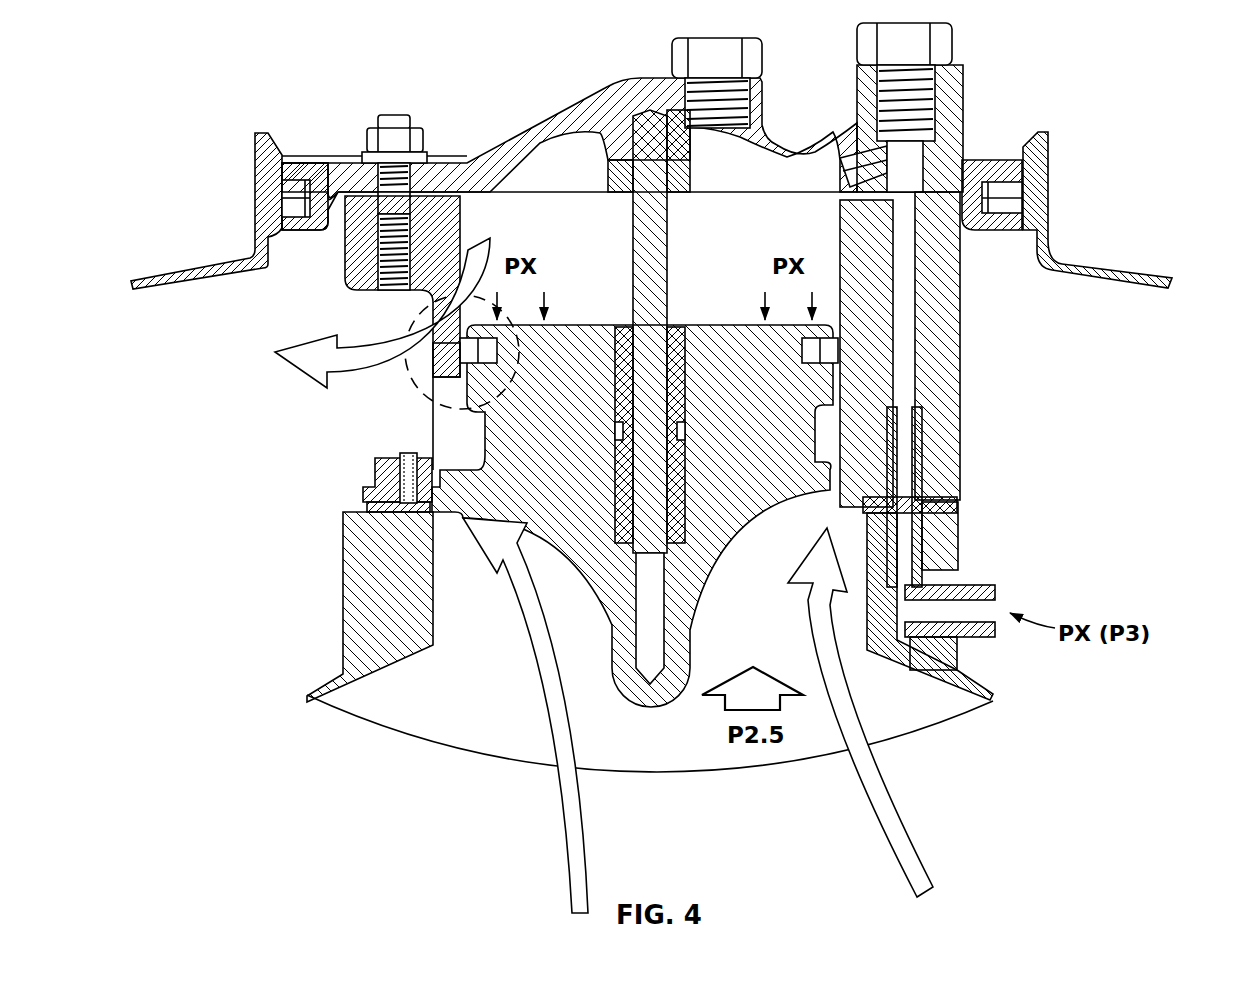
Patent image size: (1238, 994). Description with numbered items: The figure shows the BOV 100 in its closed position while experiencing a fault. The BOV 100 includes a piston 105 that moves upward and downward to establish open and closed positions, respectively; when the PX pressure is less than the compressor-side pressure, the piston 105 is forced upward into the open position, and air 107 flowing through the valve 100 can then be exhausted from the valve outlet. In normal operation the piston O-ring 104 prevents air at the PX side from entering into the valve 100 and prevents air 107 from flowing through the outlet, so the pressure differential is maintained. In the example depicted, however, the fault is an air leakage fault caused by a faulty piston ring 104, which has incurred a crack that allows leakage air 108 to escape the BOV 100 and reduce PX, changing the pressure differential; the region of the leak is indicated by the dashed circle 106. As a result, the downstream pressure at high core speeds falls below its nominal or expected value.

The BOV 100 is at (515, 133).
The piston O-ring 104 is at (437, 368).
The piston 105 is at (649, 716).
The seal region 106 is at (420, 403).
The air 107 is at (575, 857).
The leakage air 108 is at (308, 360).